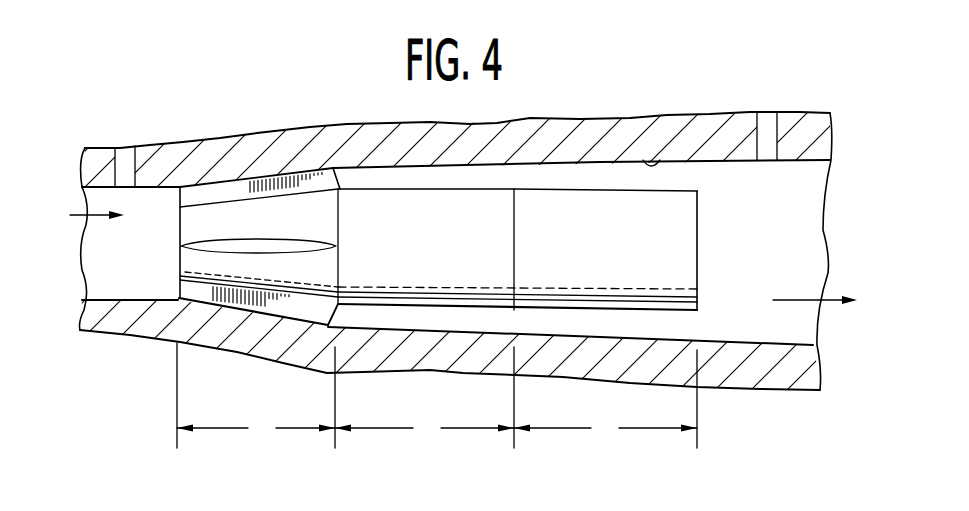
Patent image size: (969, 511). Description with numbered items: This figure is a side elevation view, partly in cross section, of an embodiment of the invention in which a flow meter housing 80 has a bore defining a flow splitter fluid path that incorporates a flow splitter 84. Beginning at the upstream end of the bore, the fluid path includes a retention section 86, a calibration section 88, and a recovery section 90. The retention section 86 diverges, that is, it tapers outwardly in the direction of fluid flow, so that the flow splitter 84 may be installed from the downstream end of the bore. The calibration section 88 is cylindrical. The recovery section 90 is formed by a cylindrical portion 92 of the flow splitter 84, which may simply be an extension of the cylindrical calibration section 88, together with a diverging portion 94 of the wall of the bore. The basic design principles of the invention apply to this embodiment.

The flow meter housing 80 is at (258, 150).
The flow splitter 84 is at (400, 203).
The retention section 86 is at (256, 395).
The calibration section 88 is at (424, 397).
The recovery section 90 is at (605, 399).
The cylindrical portion 92 is at (557, 188).
The diverging portion 94 is at (657, 160).